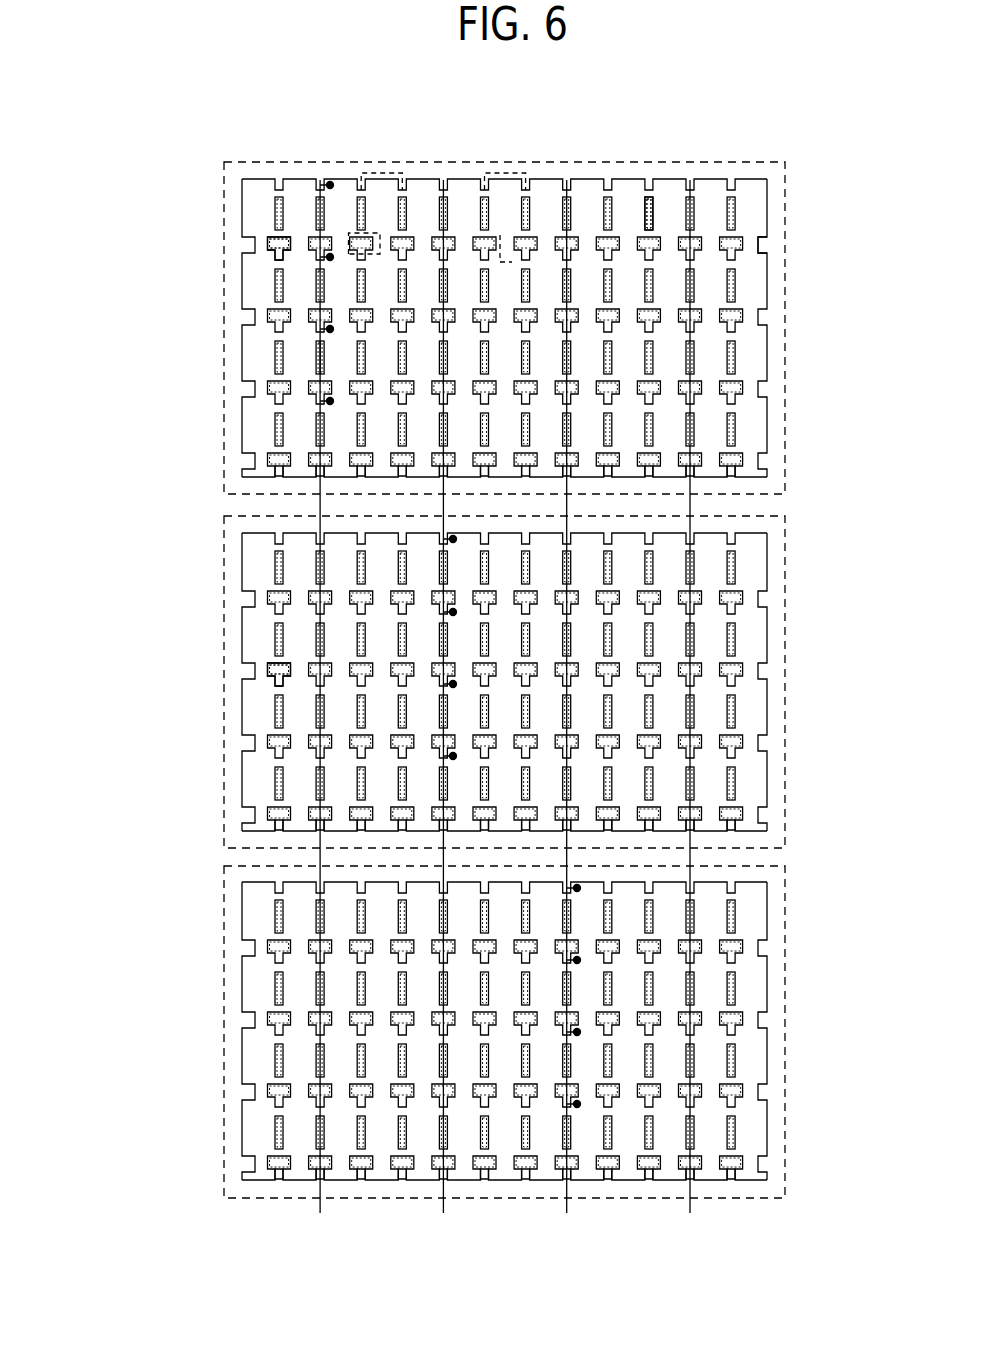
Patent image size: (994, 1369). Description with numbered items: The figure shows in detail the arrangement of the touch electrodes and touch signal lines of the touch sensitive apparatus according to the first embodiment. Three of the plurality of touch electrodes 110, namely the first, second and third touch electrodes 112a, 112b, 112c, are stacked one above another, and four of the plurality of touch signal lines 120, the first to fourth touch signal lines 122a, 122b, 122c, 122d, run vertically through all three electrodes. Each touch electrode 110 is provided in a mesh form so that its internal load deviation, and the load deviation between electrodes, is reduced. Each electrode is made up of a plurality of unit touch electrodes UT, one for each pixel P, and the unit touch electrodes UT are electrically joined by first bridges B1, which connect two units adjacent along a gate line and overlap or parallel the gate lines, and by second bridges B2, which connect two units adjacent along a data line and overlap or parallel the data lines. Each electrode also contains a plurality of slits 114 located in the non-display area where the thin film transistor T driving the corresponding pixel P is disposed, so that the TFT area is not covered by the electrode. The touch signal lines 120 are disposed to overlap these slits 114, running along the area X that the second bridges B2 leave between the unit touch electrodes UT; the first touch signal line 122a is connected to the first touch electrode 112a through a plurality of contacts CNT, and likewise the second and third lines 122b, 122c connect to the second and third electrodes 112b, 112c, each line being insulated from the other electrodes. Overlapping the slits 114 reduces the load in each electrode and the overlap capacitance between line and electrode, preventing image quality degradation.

The touch electrodes 110 is at (125, 283).
The first touch electrode 112a is at (224, 283).
The second touch electrode 112b is at (224, 636).
The third touch electrode 112c is at (224, 1000).
The slits 114 is at (273, 681).
The touch signal lines 120 is at (692, 1273).
The first touch signal line 122a is at (320, 1213).
The second touch signal line 122b is at (443, 1213).
The third touch signal line 122c is at (567, 1213).
The fourth touch signal line 122d is at (690, 1213).
The thin film transistor T is at (292, 236).
The area X is at (320, 355).
The pixel P is at (381, 173).
The unit touch electrodes UT is at (502, 173).
The first bridges B1 is at (750, 240).
The second bridges B2 is at (650, 235).
The contacts CNT is at (330, 612).